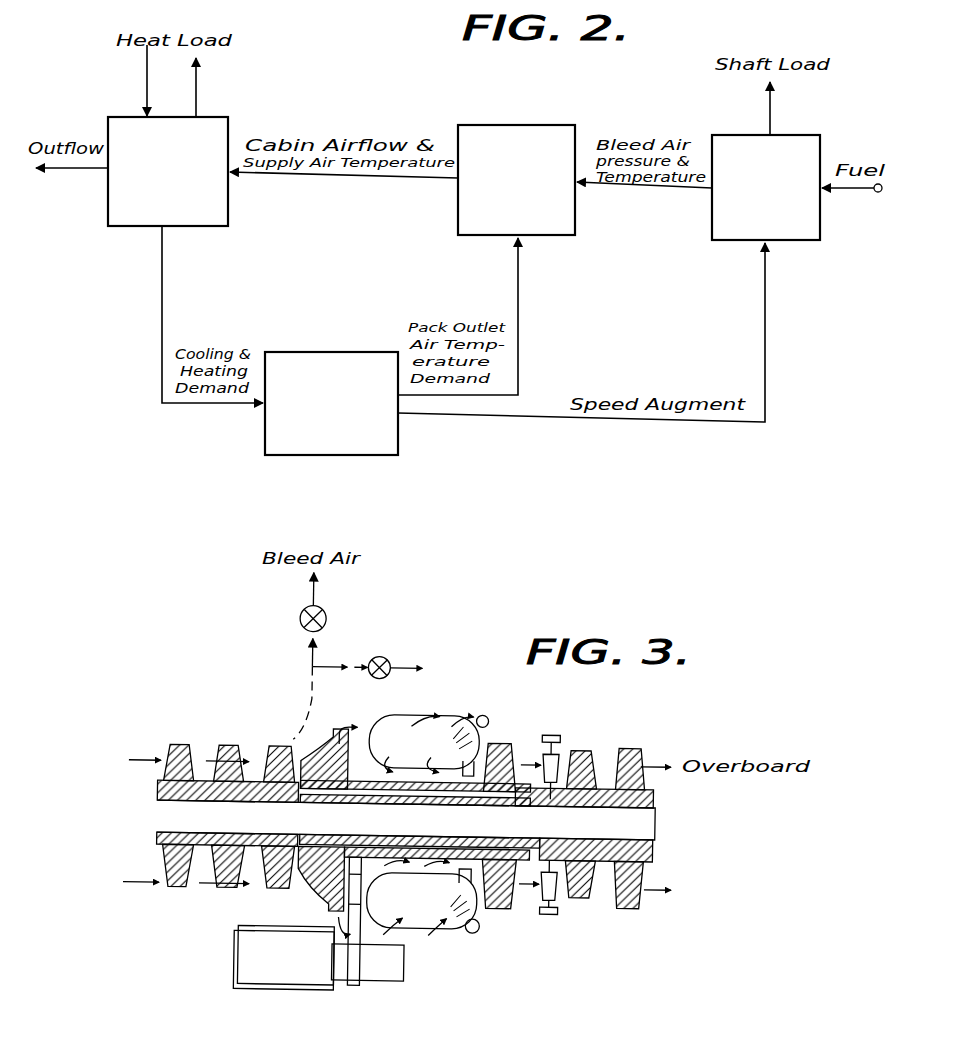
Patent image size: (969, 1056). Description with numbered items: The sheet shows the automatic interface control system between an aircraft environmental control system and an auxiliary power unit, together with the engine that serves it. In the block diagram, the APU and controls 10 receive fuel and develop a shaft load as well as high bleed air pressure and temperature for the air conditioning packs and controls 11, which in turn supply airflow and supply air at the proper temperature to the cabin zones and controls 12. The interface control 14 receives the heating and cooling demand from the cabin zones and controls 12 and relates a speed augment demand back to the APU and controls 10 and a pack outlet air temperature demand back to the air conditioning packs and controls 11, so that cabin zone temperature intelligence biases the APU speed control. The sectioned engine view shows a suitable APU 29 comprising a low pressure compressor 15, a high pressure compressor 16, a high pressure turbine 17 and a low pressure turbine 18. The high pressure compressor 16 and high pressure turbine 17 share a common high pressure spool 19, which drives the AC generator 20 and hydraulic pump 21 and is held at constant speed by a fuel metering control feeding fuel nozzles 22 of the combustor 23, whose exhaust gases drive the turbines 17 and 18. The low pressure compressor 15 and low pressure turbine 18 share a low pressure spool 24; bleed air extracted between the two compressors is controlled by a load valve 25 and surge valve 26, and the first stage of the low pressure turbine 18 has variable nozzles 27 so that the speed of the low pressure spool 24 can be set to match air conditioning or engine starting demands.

In FIG. 2, the APU and controls 10 is at (795, 135).
In FIG. 2, the air conditioning packs and controls 11 is at (563, 127).
In FIG. 2, the cabin zones and controls 12 is at (218, 117).
In FIG. 2, the interface control 14 is at (358, 352).
In FIG. 3, the low pressure compressor 15 is at (182, 748).
In FIG. 3, the high pressure compressor 16 is at (332, 876).
In FIG. 3, the high pressure turbine 17 is at (500, 907).
In FIG. 3, the low pressure turbine 18 is at (592, 900).
In FIG. 3, the high pressure spool 19 is at (522, 907).
In FIG. 3, the AC generator 20 is at (283, 957).
In FIG. 3, the hydraulic pump 21 is at (395, 982).
In FIG. 3, the fuel nozzles 22 is at (486, 714).
In FIG. 3, the combustor 23 is at (430, 715).
In FIG. 3, the low pressure spool 24 is at (652, 797).
In FIG. 3, the load valve 25 is at (323, 620).
In FIG. 3, the surge valve 26 is at (386, 660).
In FIG. 3, the variable nozzles 27 is at (560, 750).
In FIG. 3, the APU 29 is at (508, 722).